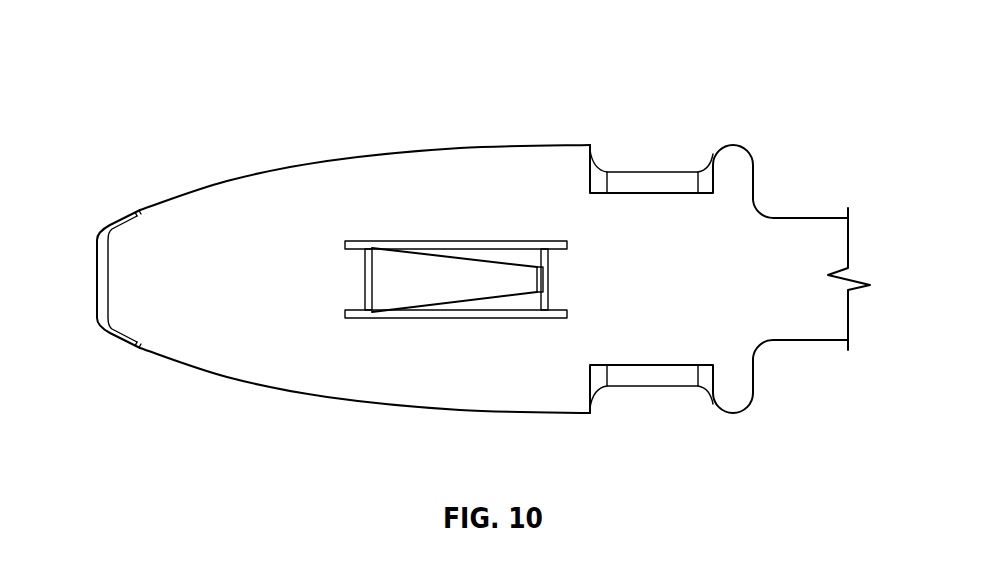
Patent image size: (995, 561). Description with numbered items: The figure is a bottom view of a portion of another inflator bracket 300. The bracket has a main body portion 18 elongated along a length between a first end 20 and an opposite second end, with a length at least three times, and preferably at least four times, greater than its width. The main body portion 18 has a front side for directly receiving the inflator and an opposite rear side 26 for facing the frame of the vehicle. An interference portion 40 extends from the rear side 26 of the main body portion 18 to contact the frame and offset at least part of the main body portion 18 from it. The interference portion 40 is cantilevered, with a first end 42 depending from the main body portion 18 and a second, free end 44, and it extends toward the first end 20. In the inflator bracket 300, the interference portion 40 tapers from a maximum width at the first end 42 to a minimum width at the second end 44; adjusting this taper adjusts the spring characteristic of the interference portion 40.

The main body portion 18 is at (474, 144).
The first end 20 is at (127, 297).
The rear side 26 is at (308, 367).
The interference portion 40 is at (458, 303).
The first end 42 is at (372, 245).
The second, free end 44 is at (520, 277).
The inflator bracket 300 is at (806, 52).